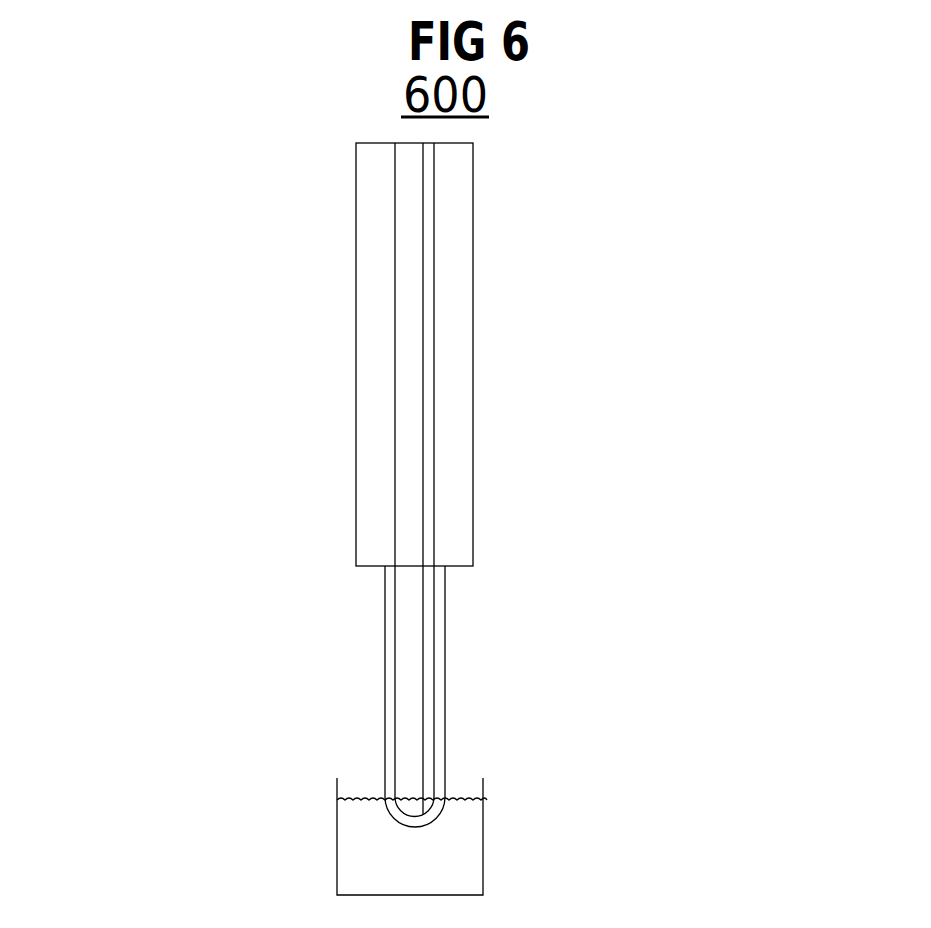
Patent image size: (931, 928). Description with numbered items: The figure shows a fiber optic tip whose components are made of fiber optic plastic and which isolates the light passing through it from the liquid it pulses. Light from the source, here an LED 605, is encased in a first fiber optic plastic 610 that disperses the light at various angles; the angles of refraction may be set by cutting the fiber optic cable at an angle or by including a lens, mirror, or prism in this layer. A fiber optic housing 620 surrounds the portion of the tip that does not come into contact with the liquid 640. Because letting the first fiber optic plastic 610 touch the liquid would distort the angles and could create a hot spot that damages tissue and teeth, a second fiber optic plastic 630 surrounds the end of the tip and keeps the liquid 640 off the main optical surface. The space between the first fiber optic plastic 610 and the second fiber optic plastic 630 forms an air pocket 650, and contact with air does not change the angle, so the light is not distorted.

The LED 605 is at (425, 252).
The first fiber optic plastic 610 is at (444, 602).
The fiber optic housing 620 is at (476, 386).
The second fiber optic plastic 630 is at (383, 657).
The liquid 640 is at (485, 842).
The air pocket 650 is at (441, 685).